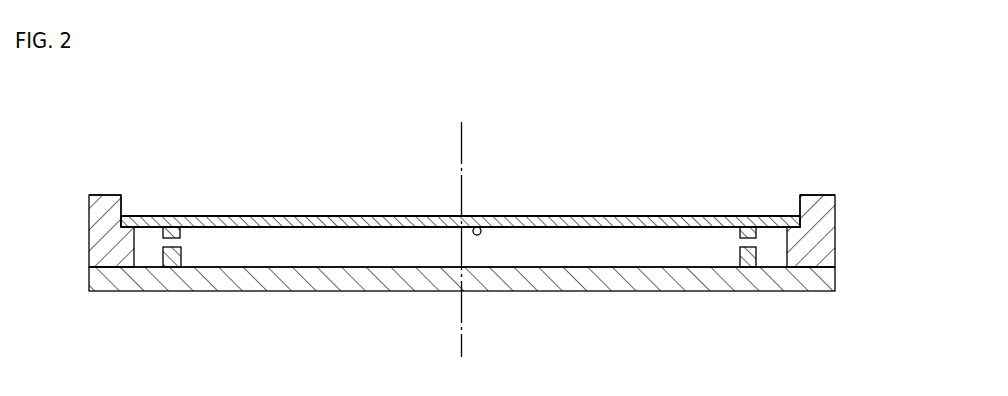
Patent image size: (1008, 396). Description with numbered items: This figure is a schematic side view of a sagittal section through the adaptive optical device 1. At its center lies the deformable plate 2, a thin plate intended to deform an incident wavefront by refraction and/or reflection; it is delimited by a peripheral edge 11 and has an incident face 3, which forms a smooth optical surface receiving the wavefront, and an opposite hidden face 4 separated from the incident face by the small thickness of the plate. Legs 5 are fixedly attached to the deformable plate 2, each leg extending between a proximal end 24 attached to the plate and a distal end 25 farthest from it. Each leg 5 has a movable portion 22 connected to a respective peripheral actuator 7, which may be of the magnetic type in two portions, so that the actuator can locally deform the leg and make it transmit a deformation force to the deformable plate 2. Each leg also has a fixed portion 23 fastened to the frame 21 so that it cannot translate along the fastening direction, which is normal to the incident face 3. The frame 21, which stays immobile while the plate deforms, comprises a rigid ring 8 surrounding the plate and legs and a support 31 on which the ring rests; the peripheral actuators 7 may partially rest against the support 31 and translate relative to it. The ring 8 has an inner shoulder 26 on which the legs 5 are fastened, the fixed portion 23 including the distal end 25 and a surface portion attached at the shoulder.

The adaptive optical device 1 is at (860, 167).
The deformable plate 2 is at (366, 216).
The incident face 3 is at (414, 216).
The hidden face 4 is at (479, 227).
The legs 5 is at (151, 216).
The peripheral actuators 7 is at (182, 232).
The rigid ring 8 is at (814, 250).
The peripheral edge 11 is at (204, 216).
The frame 21 is at (277, 301).
The movable portion 22 is at (172, 216).
The fixed portion 23 is at (131, 212).
The proximal end 24 is at (204, 228).
The distal end 25 is at (118, 218).
The inner shoulder 26 is at (133, 268).
The support 31 is at (387, 276).